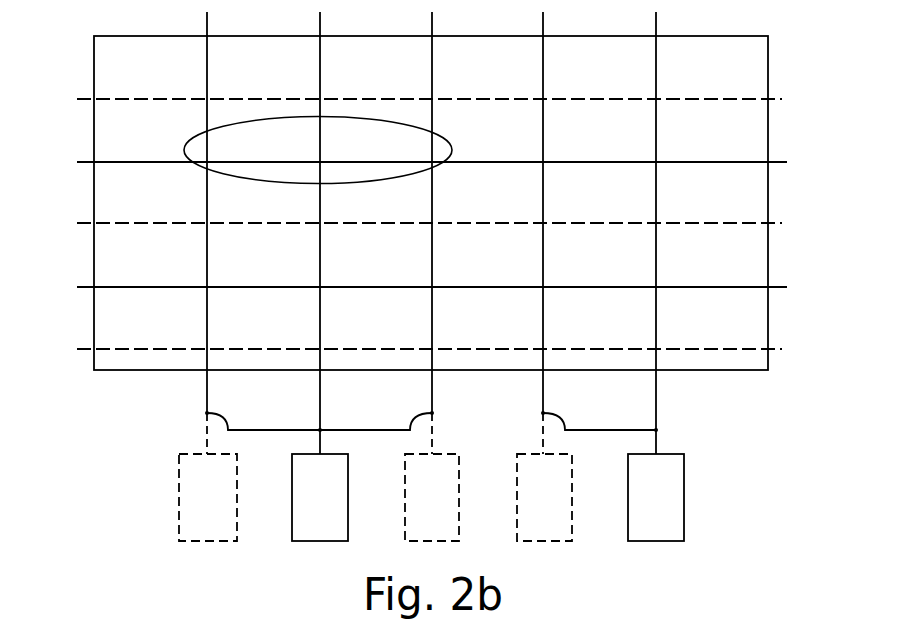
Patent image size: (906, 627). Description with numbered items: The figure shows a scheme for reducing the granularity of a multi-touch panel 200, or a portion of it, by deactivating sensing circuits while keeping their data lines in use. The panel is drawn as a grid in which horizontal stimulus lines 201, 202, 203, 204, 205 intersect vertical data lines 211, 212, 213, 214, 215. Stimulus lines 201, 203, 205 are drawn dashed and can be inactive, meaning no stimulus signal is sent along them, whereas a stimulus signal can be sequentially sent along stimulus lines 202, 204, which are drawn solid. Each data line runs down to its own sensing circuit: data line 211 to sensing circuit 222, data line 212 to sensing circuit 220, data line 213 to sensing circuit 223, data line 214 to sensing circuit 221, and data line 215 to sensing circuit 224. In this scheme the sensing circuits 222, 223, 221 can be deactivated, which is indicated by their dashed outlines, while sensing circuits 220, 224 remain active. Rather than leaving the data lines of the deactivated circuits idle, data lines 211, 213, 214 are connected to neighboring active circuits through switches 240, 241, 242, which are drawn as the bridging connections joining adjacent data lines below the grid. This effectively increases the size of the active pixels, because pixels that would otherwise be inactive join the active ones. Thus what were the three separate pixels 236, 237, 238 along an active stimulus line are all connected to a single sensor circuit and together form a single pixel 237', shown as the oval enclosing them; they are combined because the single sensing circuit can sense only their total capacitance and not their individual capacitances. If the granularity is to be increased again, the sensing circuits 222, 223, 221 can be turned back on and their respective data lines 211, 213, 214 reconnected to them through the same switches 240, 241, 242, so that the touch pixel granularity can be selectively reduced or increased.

The multi-touch panel 200 is at (127, 447).
The stimulus line 201 is at (85, 100).
The stimulus line 202 is at (85, 163).
The stimulus line 203 is at (85, 225).
The stimulus line 204 is at (85, 288).
The stimulus line 205 is at (85, 350).
The data line 211 is at (207, 398).
The data line 212 is at (320, 396).
The data line 213 is at (432, 413).
The data line 214 is at (543, 403).
The data line 215 is at (657, 388).
The sensing circuit 220 is at (338, 509).
The sensing circuit 221 is at (562, 509).
The sensing circuit 222 is at (226, 509).
The sensing circuit 223 is at (450, 509).
The sensing circuit 224 is at (674, 509).
The pixel 236 is at (208, 160).
The pixel 237 is at (349, 147).
The single pixel 237' is at (356, 144).
The pixel 238 is at (433, 161).
The switch 240 is at (236, 414).
The switch 241 is at (412, 420).
The switch 242 is at (562, 417).